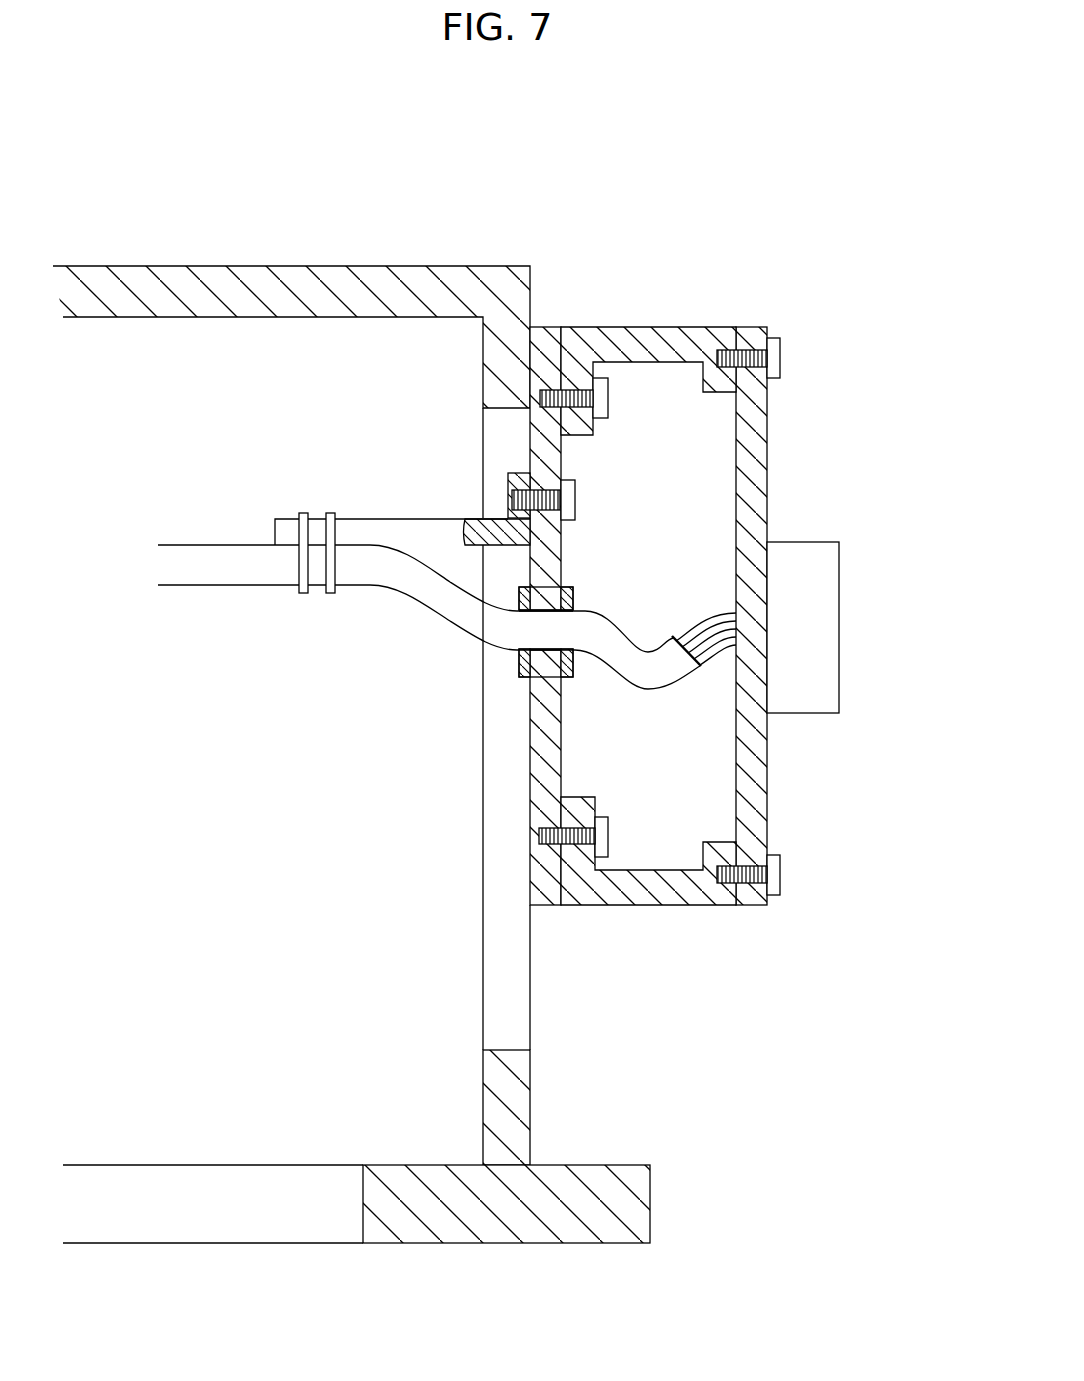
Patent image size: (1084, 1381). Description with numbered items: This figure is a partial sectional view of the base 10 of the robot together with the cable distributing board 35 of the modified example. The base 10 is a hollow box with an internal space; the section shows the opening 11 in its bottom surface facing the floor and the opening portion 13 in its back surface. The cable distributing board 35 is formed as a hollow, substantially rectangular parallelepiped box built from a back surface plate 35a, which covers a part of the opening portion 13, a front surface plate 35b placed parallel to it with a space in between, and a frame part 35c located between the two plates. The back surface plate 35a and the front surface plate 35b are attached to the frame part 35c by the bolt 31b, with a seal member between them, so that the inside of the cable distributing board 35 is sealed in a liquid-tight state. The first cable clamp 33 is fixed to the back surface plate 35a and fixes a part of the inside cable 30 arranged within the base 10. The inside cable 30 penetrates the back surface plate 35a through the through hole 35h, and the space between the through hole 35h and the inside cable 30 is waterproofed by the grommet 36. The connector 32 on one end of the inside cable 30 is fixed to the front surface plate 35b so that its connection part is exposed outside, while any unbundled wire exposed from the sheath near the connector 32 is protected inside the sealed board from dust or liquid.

The base 10 is at (273, 266).
The opening 11 is at (363, 1193).
The opening portion 13 is at (500, 1048).
The inside cable 30 is at (402, 603).
The bolt 31b is at (608, 398).
The connector 32 is at (839, 620).
The first cable clamp 33 is at (277, 492).
The cable distributing board 35 is at (656, 510).
The back surface plate 35a is at (542, 327).
The front surface plate 35b is at (745, 327).
The frame part 35c is at (648, 536).
The through hole 35h is at (548, 672).
The grommet 36 is at (517, 668).